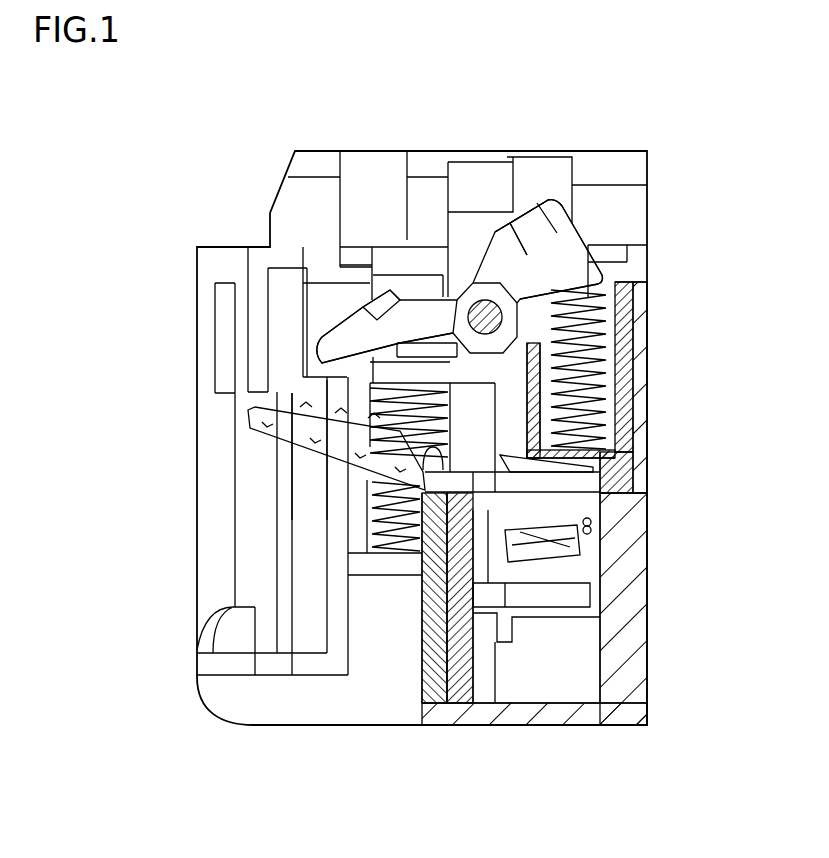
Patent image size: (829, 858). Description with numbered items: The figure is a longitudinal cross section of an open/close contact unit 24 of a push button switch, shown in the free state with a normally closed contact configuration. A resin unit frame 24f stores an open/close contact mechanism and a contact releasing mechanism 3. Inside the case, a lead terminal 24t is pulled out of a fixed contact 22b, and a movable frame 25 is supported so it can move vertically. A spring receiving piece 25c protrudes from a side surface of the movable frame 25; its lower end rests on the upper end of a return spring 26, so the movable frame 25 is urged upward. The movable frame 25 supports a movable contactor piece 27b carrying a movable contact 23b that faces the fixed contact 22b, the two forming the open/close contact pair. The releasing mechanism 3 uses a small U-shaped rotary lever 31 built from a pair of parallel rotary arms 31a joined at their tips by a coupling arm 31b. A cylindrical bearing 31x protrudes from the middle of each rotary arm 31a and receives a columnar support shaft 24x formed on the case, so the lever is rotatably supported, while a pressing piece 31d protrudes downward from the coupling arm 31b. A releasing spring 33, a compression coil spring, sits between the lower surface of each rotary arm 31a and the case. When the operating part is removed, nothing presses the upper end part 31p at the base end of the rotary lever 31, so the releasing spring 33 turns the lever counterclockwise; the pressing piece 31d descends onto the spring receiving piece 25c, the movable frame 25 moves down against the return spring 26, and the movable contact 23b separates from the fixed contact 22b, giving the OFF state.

The contact releasing mechanism 3 is at (598, 230).
The fixed contact 22b is at (590, 508).
The movable contact 23b is at (543, 523).
The open/close contact unit 24 is at (631, 140).
The unit frame 24f is at (637, 635).
The lead terminal 24t is at (335, 430).
The support shaft 24x is at (633, 345).
The movable frame 25 is at (470, 178).
The spring receiving piece 25c is at (433, 375).
The return spring 26 is at (393, 520).
The movable contactor piece 27b is at (540, 563).
The rotary lever 31 is at (418, 313).
The rotary arm 31a is at (555, 258).
The coupling arm 31b is at (330, 347).
The pressing piece 31d is at (372, 303).
The upper end part 31p is at (522, 212).
The cylindrical bearing 31x is at (478, 300).
The releasing spring 33 is at (613, 405).